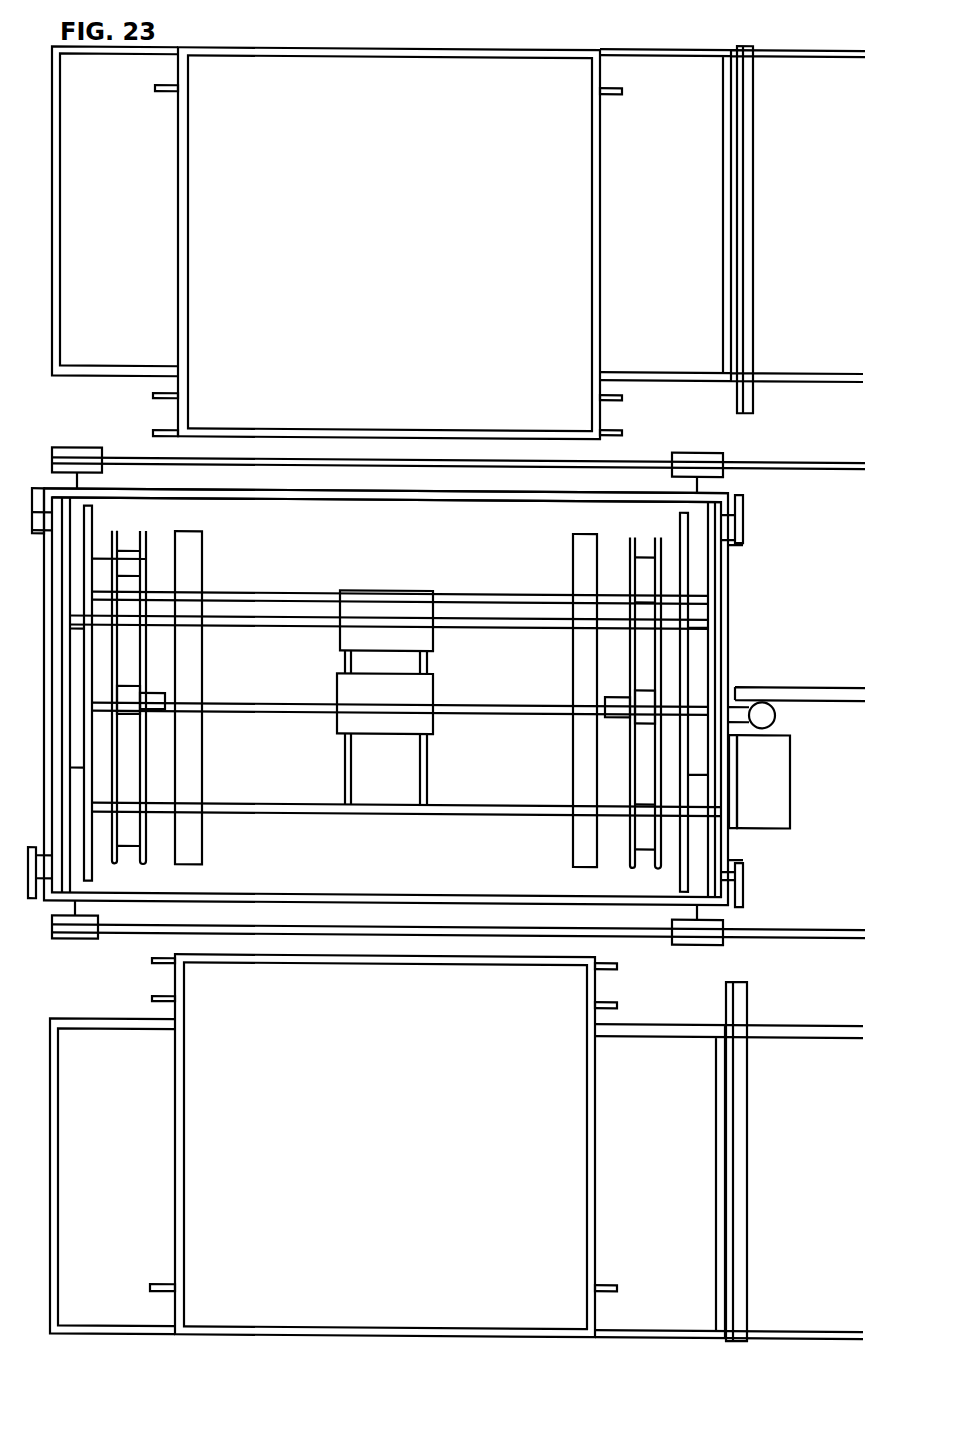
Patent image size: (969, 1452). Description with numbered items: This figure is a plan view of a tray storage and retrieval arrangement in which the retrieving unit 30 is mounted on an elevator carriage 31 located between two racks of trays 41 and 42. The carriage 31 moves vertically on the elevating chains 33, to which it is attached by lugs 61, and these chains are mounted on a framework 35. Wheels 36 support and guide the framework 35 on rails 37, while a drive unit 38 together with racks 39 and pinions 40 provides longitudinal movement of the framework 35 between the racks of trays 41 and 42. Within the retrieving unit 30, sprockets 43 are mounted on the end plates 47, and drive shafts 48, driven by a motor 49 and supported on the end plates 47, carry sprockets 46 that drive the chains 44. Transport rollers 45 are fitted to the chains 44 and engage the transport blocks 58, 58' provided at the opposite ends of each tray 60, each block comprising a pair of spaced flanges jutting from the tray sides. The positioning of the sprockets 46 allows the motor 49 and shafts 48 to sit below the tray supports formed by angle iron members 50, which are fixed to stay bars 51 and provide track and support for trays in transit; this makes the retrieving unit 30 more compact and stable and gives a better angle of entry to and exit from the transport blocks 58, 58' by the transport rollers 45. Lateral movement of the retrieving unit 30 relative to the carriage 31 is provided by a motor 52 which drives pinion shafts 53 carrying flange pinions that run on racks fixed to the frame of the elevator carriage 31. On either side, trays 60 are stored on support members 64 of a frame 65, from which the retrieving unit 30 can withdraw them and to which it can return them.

The retrieving unit 30 is at (385, 843).
The elevator carriage 31 is at (721, 603).
The elevating chains 33 is at (743, 514).
The framework 35 is at (385, 497).
The wheels 36 is at (72, 450).
The rails 37 is at (814, 457).
The drive unit 38 is at (759, 781).
The racks 39 is at (812, 682).
The pinions 40 is at (776, 710).
The rack of trays 41 is at (782, 234).
The rack of trays 42 is at (790, 1135).
The sprockets 43 is at (128, 540).
The chains 44 is at (656, 528).
The transport rollers 45 is at (157, 712).
The sprockets 46 is at (130, 692).
The end plates 47 is at (678, 883).
The drive shafts 48 is at (262, 710).
The motor 49 is at (385, 727).
The angle iron members 50 is at (202, 538).
The stay bars 51 is at (265, 591).
The motor 52 is at (386, 620).
The pinion shafts 53 is at (492, 624).
The transport block 58 is at (388, 700).
The transport block 58' is at (391, 693).
The tray 60 is at (387, 692).
The lugs 61 is at (742, 546).
The support members 64 is at (753, 338).
The frame 65 is at (60, 200).